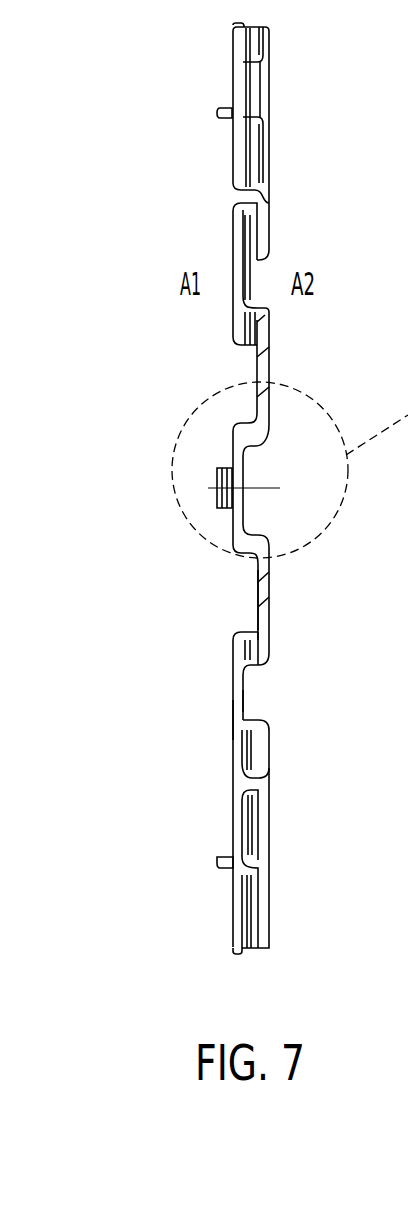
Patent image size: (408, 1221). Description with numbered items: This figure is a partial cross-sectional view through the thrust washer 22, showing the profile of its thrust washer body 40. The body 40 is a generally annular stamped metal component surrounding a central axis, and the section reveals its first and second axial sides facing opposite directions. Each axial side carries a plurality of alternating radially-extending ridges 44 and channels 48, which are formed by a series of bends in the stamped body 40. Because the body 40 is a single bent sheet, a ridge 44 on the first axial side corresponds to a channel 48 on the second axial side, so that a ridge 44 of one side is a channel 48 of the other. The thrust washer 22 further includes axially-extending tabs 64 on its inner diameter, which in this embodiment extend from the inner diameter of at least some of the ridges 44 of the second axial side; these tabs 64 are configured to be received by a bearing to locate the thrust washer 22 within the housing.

The thrust washer 22 is at (108, 185).
The thrust washer body 40 is at (217, 112).
The ridge 44 is at (265, 602).
The channel 48 is at (257, 632).
The axially-extending tab 64 is at (215, 480).